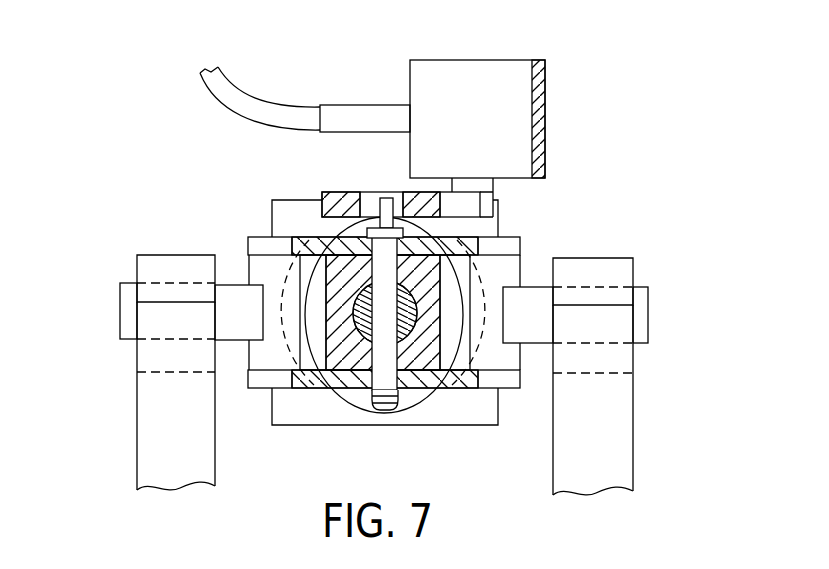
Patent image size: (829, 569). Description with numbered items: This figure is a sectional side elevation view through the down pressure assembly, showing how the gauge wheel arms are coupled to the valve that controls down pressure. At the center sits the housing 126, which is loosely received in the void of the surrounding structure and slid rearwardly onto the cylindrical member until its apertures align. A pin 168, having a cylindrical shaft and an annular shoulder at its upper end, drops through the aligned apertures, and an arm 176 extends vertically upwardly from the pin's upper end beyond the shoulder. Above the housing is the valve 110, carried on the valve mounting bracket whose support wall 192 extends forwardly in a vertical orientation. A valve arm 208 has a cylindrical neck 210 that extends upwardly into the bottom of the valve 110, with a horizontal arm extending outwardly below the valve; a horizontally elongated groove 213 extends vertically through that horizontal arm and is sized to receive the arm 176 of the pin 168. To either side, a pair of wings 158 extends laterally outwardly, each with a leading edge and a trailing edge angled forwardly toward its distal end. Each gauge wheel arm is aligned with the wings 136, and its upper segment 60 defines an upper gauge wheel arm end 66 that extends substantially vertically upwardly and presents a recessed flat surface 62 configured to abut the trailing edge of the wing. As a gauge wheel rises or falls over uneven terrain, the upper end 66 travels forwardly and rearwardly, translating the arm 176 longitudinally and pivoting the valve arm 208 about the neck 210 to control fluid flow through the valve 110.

The valve 110 is at (477, 57).
The support wall 192 is at (547, 120).
The cylindrical neck 210 is at (498, 193).
The valve arm 208 is at (321, 190).
The horizontally elongated groove 213 is at (353, 205).
The arm 176 is at (378, 200).
The wings 158 is at (236, 283).
The upper gauge wheel arm end 66 is at (152, 252).
The flat surface 62 is at (160, 357).
The upper segment 60 is at (135, 412).
The housing 126 is at (325, 322).
The pin 168 is at (388, 420).
The wings 136 is at (458, 408).